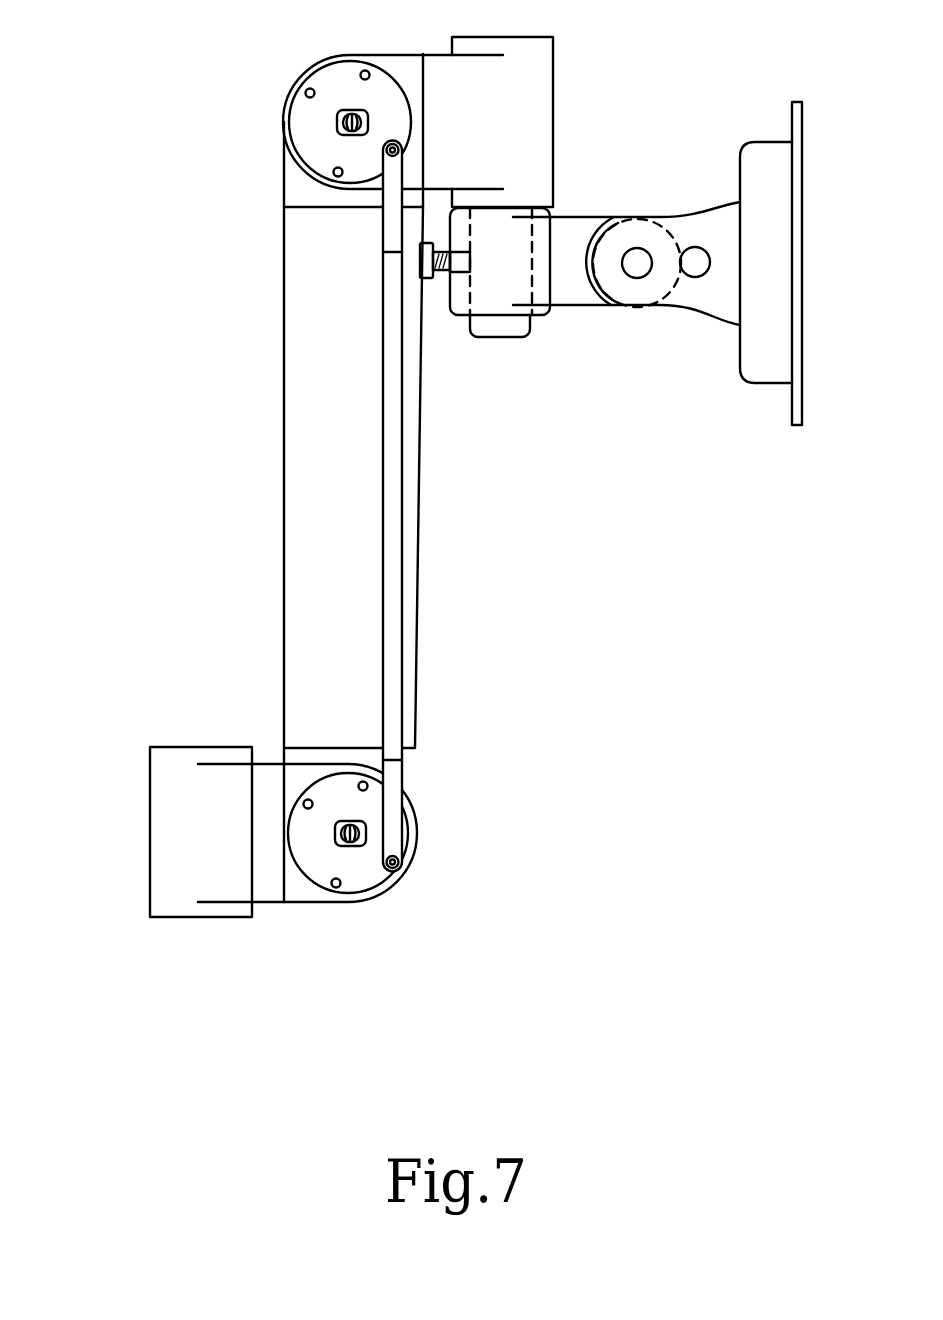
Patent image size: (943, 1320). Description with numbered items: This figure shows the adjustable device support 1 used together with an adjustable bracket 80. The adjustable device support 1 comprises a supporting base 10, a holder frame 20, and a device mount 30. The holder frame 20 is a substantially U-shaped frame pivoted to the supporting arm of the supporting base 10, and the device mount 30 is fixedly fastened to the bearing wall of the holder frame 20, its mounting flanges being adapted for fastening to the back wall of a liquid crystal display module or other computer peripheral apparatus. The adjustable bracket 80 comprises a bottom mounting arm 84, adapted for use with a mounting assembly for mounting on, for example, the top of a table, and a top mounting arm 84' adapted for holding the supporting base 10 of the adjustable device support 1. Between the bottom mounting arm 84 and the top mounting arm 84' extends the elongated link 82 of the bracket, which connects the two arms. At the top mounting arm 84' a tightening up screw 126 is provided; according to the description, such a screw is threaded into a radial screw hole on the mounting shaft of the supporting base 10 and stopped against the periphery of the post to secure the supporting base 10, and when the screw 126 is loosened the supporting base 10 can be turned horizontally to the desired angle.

The adjustable device support 1 is at (672, 148).
The supporting base 10 is at (583, 215).
The holder frame 20 is at (692, 318).
The device mount 30 is at (790, 228).
The adjustable bracket 80 is at (245, 148).
The arm link 82 is at (303, 293).
The bottom mounting arm 84 is at (148, 832).
The top mounting arm 84' is at (500, 315).
The tightening up screw 126 is at (423, 280).